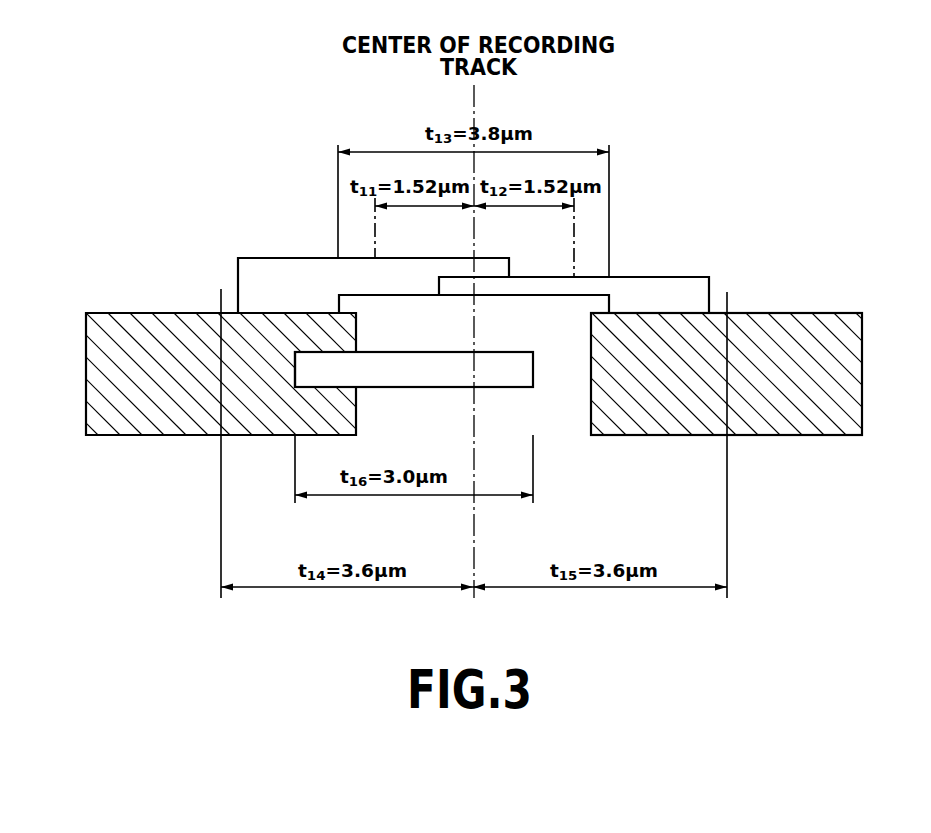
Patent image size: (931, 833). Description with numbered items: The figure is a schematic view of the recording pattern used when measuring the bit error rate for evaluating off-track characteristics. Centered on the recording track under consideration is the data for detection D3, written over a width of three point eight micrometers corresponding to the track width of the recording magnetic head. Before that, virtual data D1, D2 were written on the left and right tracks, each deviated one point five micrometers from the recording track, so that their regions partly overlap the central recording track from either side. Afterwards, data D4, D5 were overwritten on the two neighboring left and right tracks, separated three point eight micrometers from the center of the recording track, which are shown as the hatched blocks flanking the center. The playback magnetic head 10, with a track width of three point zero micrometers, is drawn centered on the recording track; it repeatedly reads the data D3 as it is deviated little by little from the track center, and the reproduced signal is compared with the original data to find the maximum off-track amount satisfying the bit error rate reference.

The playback magnetic head 10 is at (402, 352).
The virtual data D1 is at (373, 285).
The virtual data D2 is at (574, 295).
The data for detection D3 is at (474, 311).
The overwritten data D4 is at (465, 374).
The overwritten data D5 is at (465, 374).